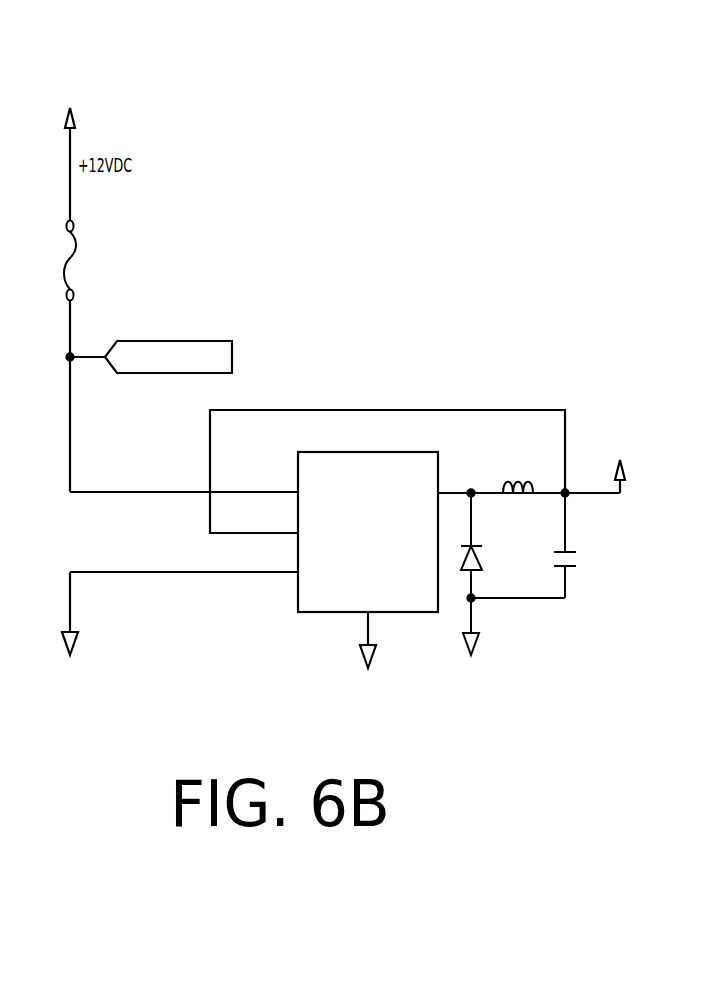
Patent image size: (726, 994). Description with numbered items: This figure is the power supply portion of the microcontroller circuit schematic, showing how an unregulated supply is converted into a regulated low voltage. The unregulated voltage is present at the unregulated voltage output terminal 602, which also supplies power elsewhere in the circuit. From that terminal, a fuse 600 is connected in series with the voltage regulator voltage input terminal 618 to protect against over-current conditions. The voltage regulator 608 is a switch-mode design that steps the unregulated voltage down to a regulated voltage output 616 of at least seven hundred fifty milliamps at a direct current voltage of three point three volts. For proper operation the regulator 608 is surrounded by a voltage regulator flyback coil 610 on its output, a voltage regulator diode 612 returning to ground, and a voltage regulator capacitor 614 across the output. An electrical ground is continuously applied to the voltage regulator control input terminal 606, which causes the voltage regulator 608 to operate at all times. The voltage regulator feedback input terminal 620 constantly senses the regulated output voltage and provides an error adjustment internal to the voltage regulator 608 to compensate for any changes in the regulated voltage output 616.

The fuse 600 is at (88, 248).
The unregulated voltage output terminal 602 is at (78, 370).
The voltage regulator control input terminal 606 is at (290, 587).
The voltage regulator 608 is at (328, 626).
The voltage regulator flyback coil 610 is at (520, 465).
The voltage regulator diode 612 is at (464, 588).
The voltage regulator capacitor 614 is at (580, 587).
The regulated voltage output 616 is at (575, 480).
The voltage regulator voltage input terminal 618 is at (282, 480).
The voltage regulator feedback input terminal 620 is at (282, 525).